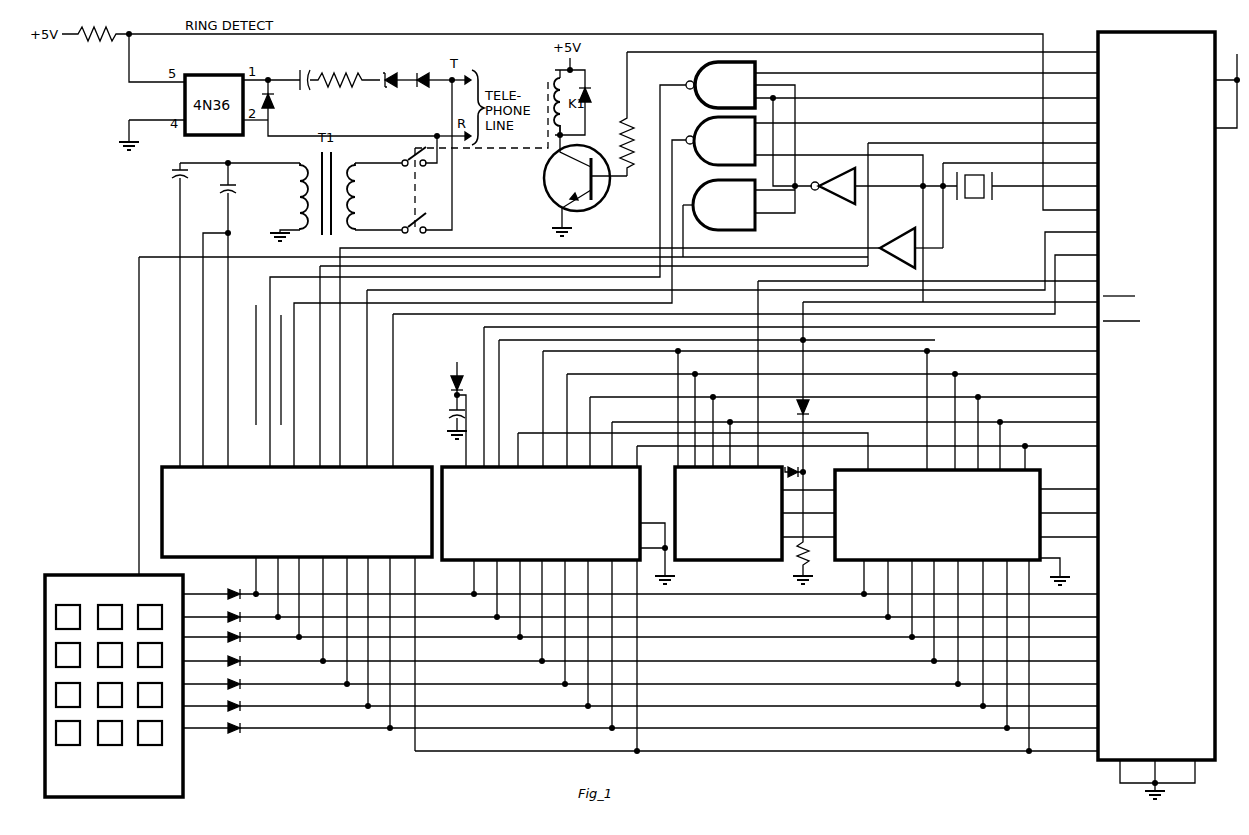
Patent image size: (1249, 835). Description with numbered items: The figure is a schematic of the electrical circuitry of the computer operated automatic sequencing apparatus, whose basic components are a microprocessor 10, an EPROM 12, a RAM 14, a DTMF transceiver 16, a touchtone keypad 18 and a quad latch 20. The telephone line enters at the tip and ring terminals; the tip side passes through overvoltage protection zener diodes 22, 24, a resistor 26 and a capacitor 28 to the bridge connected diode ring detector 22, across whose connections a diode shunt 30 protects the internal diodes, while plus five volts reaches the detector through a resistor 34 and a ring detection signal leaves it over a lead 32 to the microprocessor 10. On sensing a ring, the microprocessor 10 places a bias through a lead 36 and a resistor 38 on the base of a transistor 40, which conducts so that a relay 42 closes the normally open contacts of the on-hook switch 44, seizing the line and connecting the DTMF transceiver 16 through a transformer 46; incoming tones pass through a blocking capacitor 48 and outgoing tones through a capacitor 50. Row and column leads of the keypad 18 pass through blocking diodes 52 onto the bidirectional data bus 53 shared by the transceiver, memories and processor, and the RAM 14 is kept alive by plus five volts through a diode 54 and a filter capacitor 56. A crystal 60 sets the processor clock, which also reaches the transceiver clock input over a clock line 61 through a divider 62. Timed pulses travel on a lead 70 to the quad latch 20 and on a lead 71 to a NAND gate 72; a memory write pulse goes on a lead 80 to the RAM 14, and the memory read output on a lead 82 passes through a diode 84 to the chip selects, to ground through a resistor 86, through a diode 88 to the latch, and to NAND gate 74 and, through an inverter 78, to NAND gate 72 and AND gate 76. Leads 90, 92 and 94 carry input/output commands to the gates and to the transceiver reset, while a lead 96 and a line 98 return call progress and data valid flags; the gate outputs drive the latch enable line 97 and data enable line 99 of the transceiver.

The microprocessor 10 is at (1168, 609).
The erasable programmable read only memory 12 is at (1006, 530).
The random access memory 14 is at (610, 510).
The DTMF transceiver 16 is at (410, 544).
The touchtone keypad 18 is at (168, 778).
The quad latch 20 is at (712, 488).
The ring detector 22 is at (125, 120).
The zener diode 24 is at (392, 88).
The resistor 26 is at (345, 48).
The capacitor 28 is at (302, 90).
The diode shunt 30 is at (282, 120).
The lead 32 is at (120, 82).
The resistor 34 is at (80, 45).
The lead 36 is at (1072, 52).
The resistor 38 is at (628, 118).
The transistor 40 is at (545, 200).
The relay 42 is at (586, 70).
The on-hook switch 44 is at (408, 176).
The transformer 46 is at (345, 168).
The blocking capacitor 48 is at (232, 188).
The capacitor 50 is at (168, 178).
The blocking diodes 52 is at (244, 618).
The data bus 53 is at (775, 681).
The diode 54 is at (452, 358).
The filter capacitor 56 is at (452, 414).
The crystal 60 is at (996, 190).
The clock line 61 is at (810, 250).
The divider 62 is at (900, 236).
The lead 70 is at (742, 284).
The lead 71 is at (912, 74).
The NAND gate 72 is at (728, 95).
The NAND gate 74 is at (728, 151).
The AND gate 76 is at (728, 215).
The inverter 78 is at (830, 200).
The lead 80 is at (862, 328).
The lead 82 is at (810, 362).
The diode 84 is at (812, 404).
The resistor 86 is at (794, 560).
The diode 88 is at (780, 450).
The lead 90 is at (970, 102).
The lead 92 is at (954, 120).
The lead 94 is at (858, 140).
The lead 96 is at (1040, 260).
The latch enable line 97 is at (272, 284).
The line 98 is at (734, 314).
The data enable line 99 is at (306, 314).